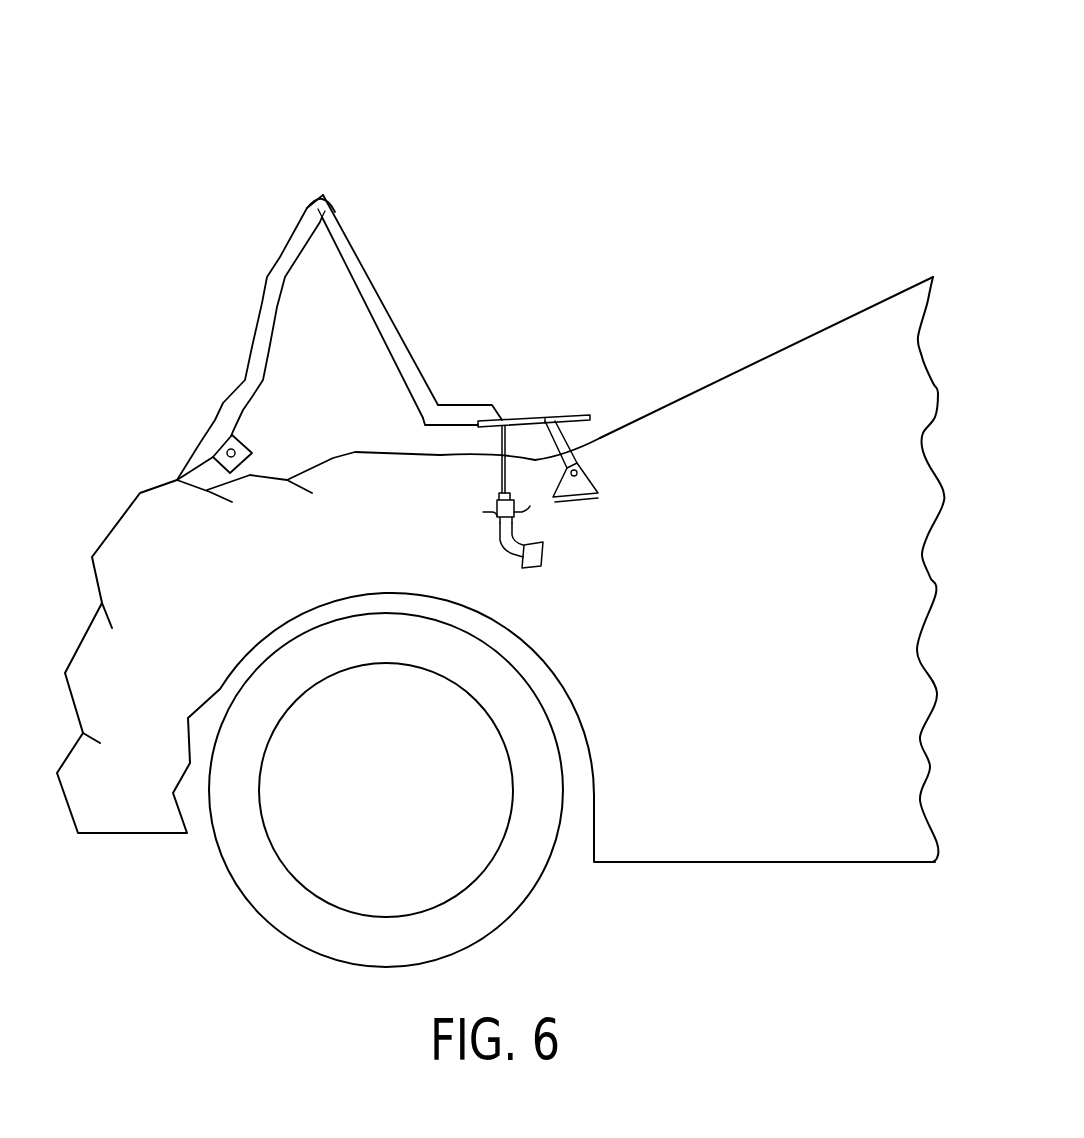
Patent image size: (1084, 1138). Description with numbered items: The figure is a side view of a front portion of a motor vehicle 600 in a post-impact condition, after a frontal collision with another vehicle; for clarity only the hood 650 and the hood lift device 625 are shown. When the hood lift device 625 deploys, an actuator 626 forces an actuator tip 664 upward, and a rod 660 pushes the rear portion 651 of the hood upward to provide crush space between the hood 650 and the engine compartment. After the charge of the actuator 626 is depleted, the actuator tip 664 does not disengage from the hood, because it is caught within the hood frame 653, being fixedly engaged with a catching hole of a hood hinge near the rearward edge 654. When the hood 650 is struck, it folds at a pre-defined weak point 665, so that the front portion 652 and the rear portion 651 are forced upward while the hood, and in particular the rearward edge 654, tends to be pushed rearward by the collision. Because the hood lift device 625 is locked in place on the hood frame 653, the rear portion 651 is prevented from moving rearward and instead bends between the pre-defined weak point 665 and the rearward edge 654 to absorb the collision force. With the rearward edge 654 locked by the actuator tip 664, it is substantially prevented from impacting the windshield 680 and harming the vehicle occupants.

The motor vehicle 600 is at (632, 97).
The hood lift device 625 is at (580, 571).
The actuator 626 is at (523, 568).
The hood 650 is at (380, 306).
The rear portion 651 is at (402, 288).
The front portion 652 is at (245, 298).
The hood frame 653 is at (425, 422).
The rearward edge 654 is at (575, 417).
The rod 660 is at (498, 472).
The actuator tip 664 is at (500, 418).
The pre-defined weak point 665 is at (322, 197).
The windshield 680 is at (838, 317).